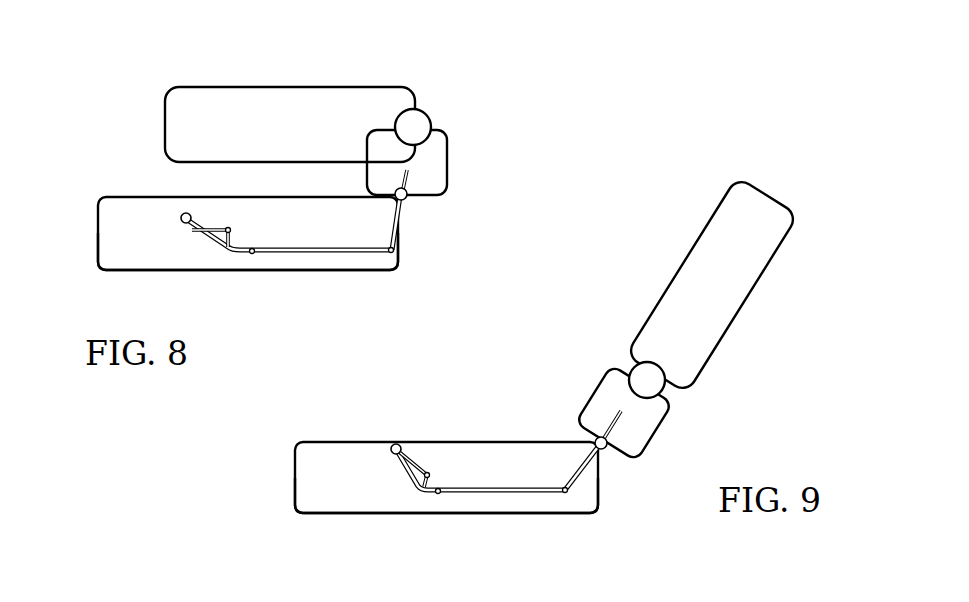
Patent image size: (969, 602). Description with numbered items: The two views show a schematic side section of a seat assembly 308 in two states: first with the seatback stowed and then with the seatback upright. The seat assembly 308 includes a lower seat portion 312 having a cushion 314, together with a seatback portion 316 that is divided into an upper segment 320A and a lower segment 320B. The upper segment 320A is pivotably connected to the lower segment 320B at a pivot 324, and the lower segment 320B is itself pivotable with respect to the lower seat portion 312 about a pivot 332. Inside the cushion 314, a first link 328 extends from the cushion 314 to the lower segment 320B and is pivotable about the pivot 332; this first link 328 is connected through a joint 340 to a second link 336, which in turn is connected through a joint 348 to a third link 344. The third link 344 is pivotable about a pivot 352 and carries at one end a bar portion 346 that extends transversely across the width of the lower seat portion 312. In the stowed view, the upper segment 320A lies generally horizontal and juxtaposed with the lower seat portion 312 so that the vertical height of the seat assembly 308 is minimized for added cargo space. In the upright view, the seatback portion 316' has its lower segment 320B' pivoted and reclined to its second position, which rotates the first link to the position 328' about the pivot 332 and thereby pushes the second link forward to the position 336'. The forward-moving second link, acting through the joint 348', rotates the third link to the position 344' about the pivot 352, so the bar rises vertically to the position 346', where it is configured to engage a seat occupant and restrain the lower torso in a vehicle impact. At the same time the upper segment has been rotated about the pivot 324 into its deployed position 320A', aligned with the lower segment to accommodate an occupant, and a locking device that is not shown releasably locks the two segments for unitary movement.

In FIG. 8, the seat assembly 308 is at (118, 79).
In FIG. 9, the seat assembly 308 is at (663, 246).
In FIG. 8, the lower seat portion 312 is at (103, 223).
In FIG. 9, the lower seat portion 312 is at (296, 452).
In FIG. 8, the cushion 314 is at (103, 235).
In FIG. 9, the cushion 314 is at (297, 486).
In FIG. 8, the seatback portion 316 is at (306, 111).
In FIG. 9, the seatback portion 316' is at (694, 293).
In FIG. 8, the upper segment 320A is at (290, 94).
In FIG. 9, the upper segment 320A' is at (736, 285).
In FIG. 8, the lower segment 320B is at (443, 162).
In FIG. 9, the lower segment 320B' is at (660, 413).
In FIG. 8, the pivot 324 is at (427, 112).
In FIG. 9, the pivot 324 is at (645, 380).
In FIG. 8, the first link 328 is at (440, 231).
In FIG. 9, the first link 328' is at (565, 431).
In FIG. 8, the pivot 332 is at (406, 200).
In FIG. 9, the pivot 332 is at (607, 455).
In FIG. 8, the second link 336 is at (316, 291).
In FIG. 9, the second link 336' is at (496, 530).
In FIG. 8, the joint 340 is at (402, 260).
In FIG. 9, the joint 340 is at (577, 498).
In FIG. 8, the third link 344 is at (193, 265).
In FIG. 9, the third link 344' is at (422, 430).
In FIG. 8, the bar portion 346 is at (148, 182).
In FIG. 9, the bar portion 346' is at (378, 412).
In FIG. 8, the joint 348 is at (265, 291).
In FIG. 9, the joint 348' is at (451, 530).
In FIG. 8, the pivot 352 is at (235, 225).
In FIG. 9, the pivot 352 is at (432, 475).